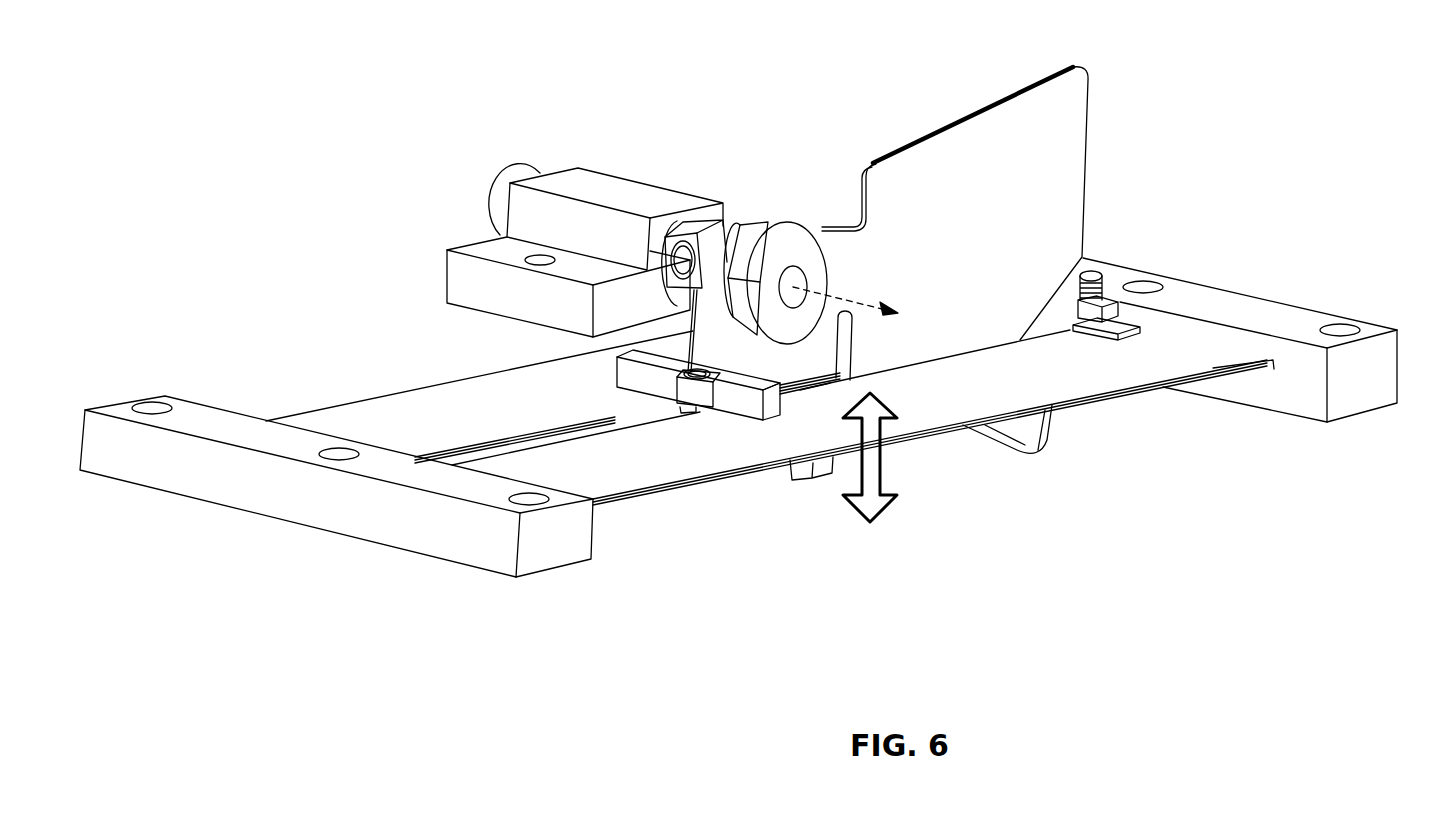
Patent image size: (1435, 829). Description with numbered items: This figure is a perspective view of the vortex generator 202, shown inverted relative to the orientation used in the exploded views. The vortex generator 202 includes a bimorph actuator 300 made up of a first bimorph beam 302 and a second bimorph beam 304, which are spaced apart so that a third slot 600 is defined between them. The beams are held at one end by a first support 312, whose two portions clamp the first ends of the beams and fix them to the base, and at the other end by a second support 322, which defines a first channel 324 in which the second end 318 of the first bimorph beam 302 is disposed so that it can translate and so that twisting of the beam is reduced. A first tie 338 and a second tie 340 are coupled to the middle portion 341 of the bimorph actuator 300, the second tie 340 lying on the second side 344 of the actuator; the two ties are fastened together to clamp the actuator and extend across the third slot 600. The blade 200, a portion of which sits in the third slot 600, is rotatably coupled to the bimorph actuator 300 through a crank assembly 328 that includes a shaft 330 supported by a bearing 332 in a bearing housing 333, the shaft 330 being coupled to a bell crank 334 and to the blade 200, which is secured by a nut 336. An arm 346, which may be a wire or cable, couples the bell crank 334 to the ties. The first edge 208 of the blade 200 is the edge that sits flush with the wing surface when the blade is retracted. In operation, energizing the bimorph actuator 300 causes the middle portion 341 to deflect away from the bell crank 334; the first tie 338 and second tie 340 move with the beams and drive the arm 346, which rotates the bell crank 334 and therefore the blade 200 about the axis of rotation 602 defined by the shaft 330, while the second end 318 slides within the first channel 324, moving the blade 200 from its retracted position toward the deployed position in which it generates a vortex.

The blade 200 is at (1075, 147).
The vortex generator 202 is at (1064, 243).
The first edge 208 is at (932, 127).
The bimorph actuator 300 is at (740, 362).
The first bimorph beam 302 is at (620, 477).
The second bimorph beam 304 is at (364, 419).
The first support 312 is at (415, 528).
The second end 318 is at (1206, 344).
The second support 322 is at (1355, 358).
The first channel 324 is at (1170, 330).
The crank assembly 328 is at (555, 259).
The shaft 330 is at (753, 290).
The bearing 332 is at (492, 212).
The bearing housing 333 is at (625, 193).
The bell crank 334 is at (732, 227).
The nut 336 is at (800, 243).
The first tie 338 is at (807, 478).
The second tie 340 is at (627, 372).
The middle portion 341 is at (772, 433).
The second side 344 is at (480, 400).
The arm 346 is at (700, 346).
The third slot 600 is at (453, 452).
The axis of rotation 602 is at (872, 302).